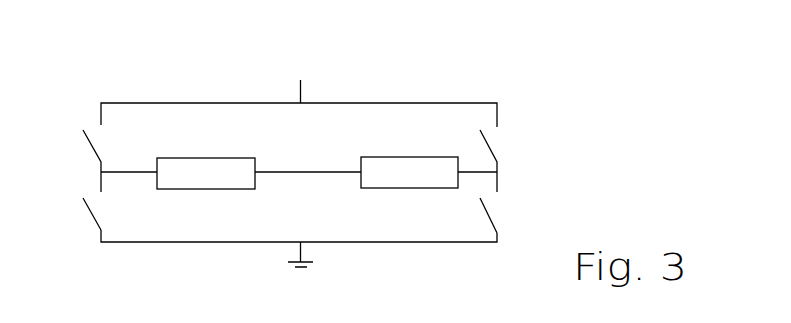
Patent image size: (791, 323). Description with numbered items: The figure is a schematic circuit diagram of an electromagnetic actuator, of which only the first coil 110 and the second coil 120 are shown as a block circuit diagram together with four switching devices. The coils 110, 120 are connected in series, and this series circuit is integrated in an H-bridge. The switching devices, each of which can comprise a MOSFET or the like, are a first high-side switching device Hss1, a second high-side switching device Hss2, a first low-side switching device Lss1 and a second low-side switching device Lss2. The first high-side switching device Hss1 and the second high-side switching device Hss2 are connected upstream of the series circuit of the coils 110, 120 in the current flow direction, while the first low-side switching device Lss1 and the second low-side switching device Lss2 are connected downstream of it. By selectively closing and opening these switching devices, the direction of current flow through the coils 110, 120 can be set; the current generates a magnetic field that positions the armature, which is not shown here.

The first coil 110 is at (218, 168).
The second coil 120 is at (415, 170).
The first high-side switching device Hss1 is at (130, 155).
The first low-side switching device Lss1 is at (130, 213).
The second high-side switching device Hss2 is at (533, 156).
The second low-side switching device Lss2 is at (533, 212).